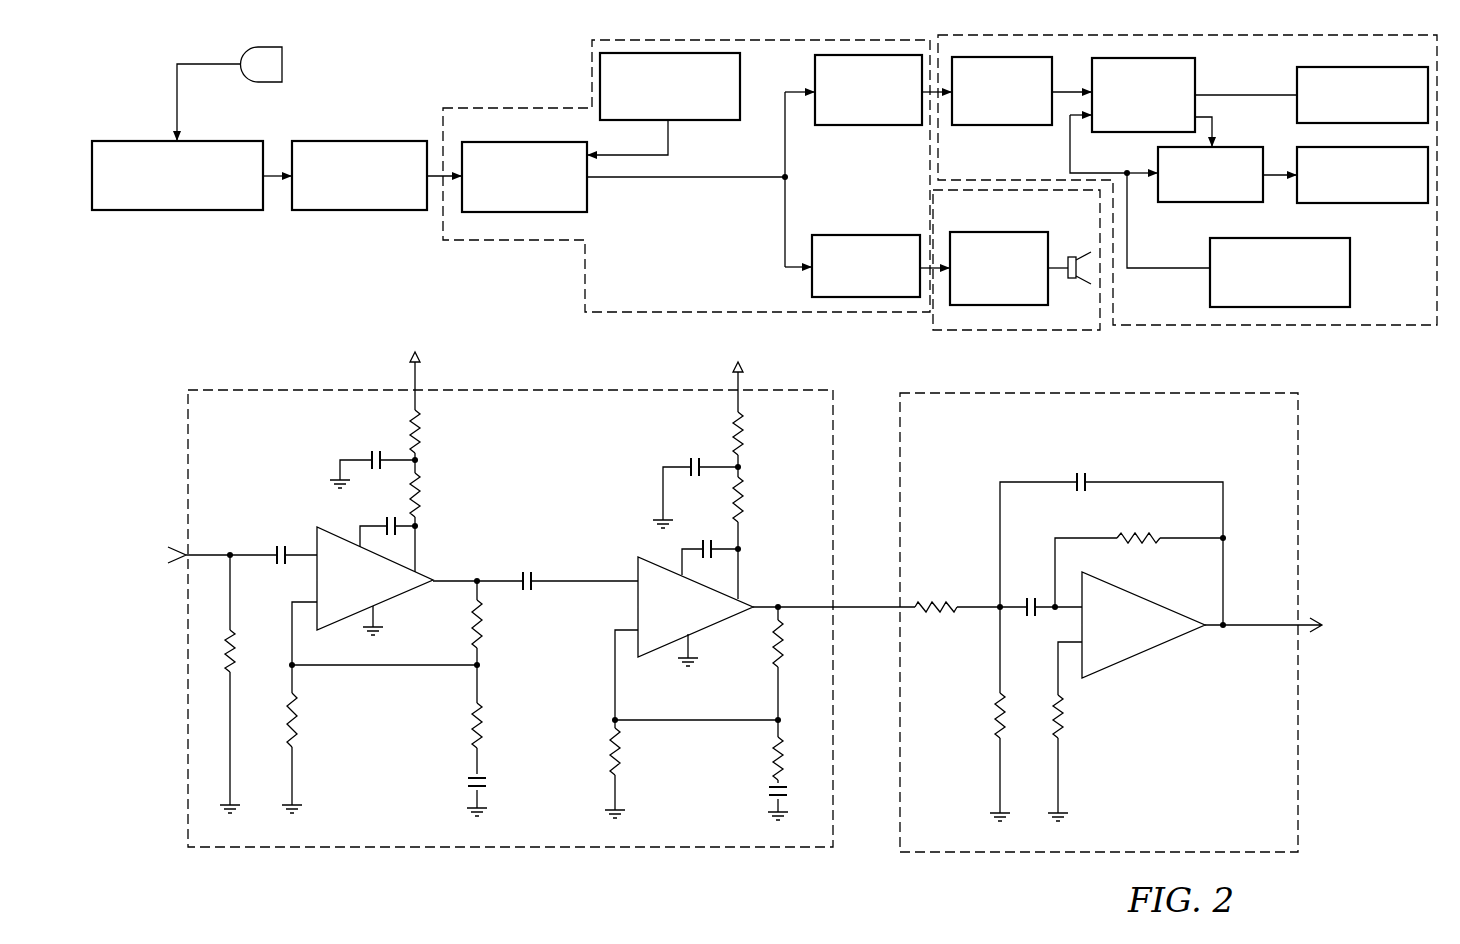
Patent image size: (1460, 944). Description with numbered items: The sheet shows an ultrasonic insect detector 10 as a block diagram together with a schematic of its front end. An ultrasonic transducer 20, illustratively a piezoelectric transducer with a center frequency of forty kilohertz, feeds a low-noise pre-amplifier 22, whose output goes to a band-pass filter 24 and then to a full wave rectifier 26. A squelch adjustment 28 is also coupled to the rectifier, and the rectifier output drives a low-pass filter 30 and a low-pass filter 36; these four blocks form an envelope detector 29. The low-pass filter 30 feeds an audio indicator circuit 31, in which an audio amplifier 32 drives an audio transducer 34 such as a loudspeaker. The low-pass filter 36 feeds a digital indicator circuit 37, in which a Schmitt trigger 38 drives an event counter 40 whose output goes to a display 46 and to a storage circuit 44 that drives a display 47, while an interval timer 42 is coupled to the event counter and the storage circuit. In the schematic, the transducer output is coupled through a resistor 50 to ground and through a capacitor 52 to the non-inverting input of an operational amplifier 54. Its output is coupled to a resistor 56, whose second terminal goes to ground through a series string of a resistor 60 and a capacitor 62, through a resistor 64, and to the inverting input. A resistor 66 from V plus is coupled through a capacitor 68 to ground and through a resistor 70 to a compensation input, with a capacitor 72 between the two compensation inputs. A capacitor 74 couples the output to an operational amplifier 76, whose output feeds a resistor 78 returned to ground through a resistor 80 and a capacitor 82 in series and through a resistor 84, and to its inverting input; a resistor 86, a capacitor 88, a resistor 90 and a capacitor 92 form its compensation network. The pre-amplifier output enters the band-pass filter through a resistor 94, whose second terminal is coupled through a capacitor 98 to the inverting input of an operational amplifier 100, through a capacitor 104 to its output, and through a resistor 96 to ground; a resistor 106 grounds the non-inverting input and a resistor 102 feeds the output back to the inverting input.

In FIG. 1, the ultrasonic insect detector 10 is at (766, 200).
In FIG. 1, the ultrasonic transducer 20 is at (283, 58).
In FIG. 1, the low-noise pre-amplifier 22 is at (136, 140).
In FIG. 2, the low-noise pre-amplifier 22 is at (249, 384).
In FIG. 1, the band-pass filter 24 is at (307, 140).
In FIG. 2, the band-pass filter 24 is at (1304, 443).
In FIG. 1, the full wave rectifier 26 is at (565, 212).
In FIG. 1, the squelch adjustment 28 is at (740, 86).
In FIG. 1, the envelope detector 29 is at (585, 283).
In FIG. 1, the low-pass filter 30 is at (860, 235).
In FIG. 1, the audio indicator circuit 31 is at (1062, 332).
In FIG. 1, the audio amplifier 32 is at (1020, 232).
In FIG. 1, the audio transducer 34 is at (1071, 256).
In FIG. 1, the low-pass filter 36 is at (888, 127).
In FIG. 1, the digital indicator circuit 37 is at (1409, 330).
In FIG. 1, the Schmitt trigger 38 is at (1015, 127).
In FIG. 1, the event counter 40 is at (1195, 72).
In FIG. 1, the interval timer 42 is at (1350, 274).
In FIG. 1, the storage circuit 44 is at (1205, 203).
In FIG. 1, the visual display 46 is at (1297, 81).
In FIG. 1, the visual display 47 is at (1385, 204).
In FIG. 2, the resistor 50 is at (235, 652).
In FIG. 2, the capacitor 52 is at (277, 547).
In FIG. 2, the operational amplifier 54 is at (344, 612).
In FIG. 2, the resistor 56 is at (470, 622).
In FIG. 2, the resistor 60 is at (472, 722).
In FIG. 2, the capacitor 62 is at (481, 780).
In FIG. 2, the resistor 64 is at (298, 703).
In FIG. 2, the resistor 66 is at (420, 432).
In FIG. 2, the capacitor 68 is at (372, 457).
In FIG. 2, the resistor 70 is at (420, 497).
In FIG. 2, the capacitor 72 is at (387, 522).
In FIG. 2, the capacitor 74 is at (522, 570).
In FIG. 2, the operational amplifier 76 is at (722, 626).
In FIG. 2, the resistor 78 is at (770, 650).
In FIG. 2, the resistor 80 is at (772, 760).
In FIG. 2, the capacitor 82 is at (770, 801).
In FIG. 2, the resistor 84 is at (627, 758).
In FIG. 2, the resistor 86 is at (745, 444).
In FIG. 2, the capacitor 88 is at (690, 460).
In FIG. 2, the resistor 90 is at (745, 501).
In FIG. 2, the capacitor 92 is at (704, 541).
In FIG. 2, the resistor 94 is at (930, 615).
In FIG. 2, the resistor 96 is at (995, 717).
In FIG. 2, the capacitor 98 is at (1022, 620).
In FIG. 2, the operational amplifier 100 is at (1168, 596).
In FIG. 2, the resistor 102 is at (1158, 517).
In FIG. 2, the capacitor 104 is at (1085, 479).
In FIG. 2, the resistor 106 is at (1065, 717).